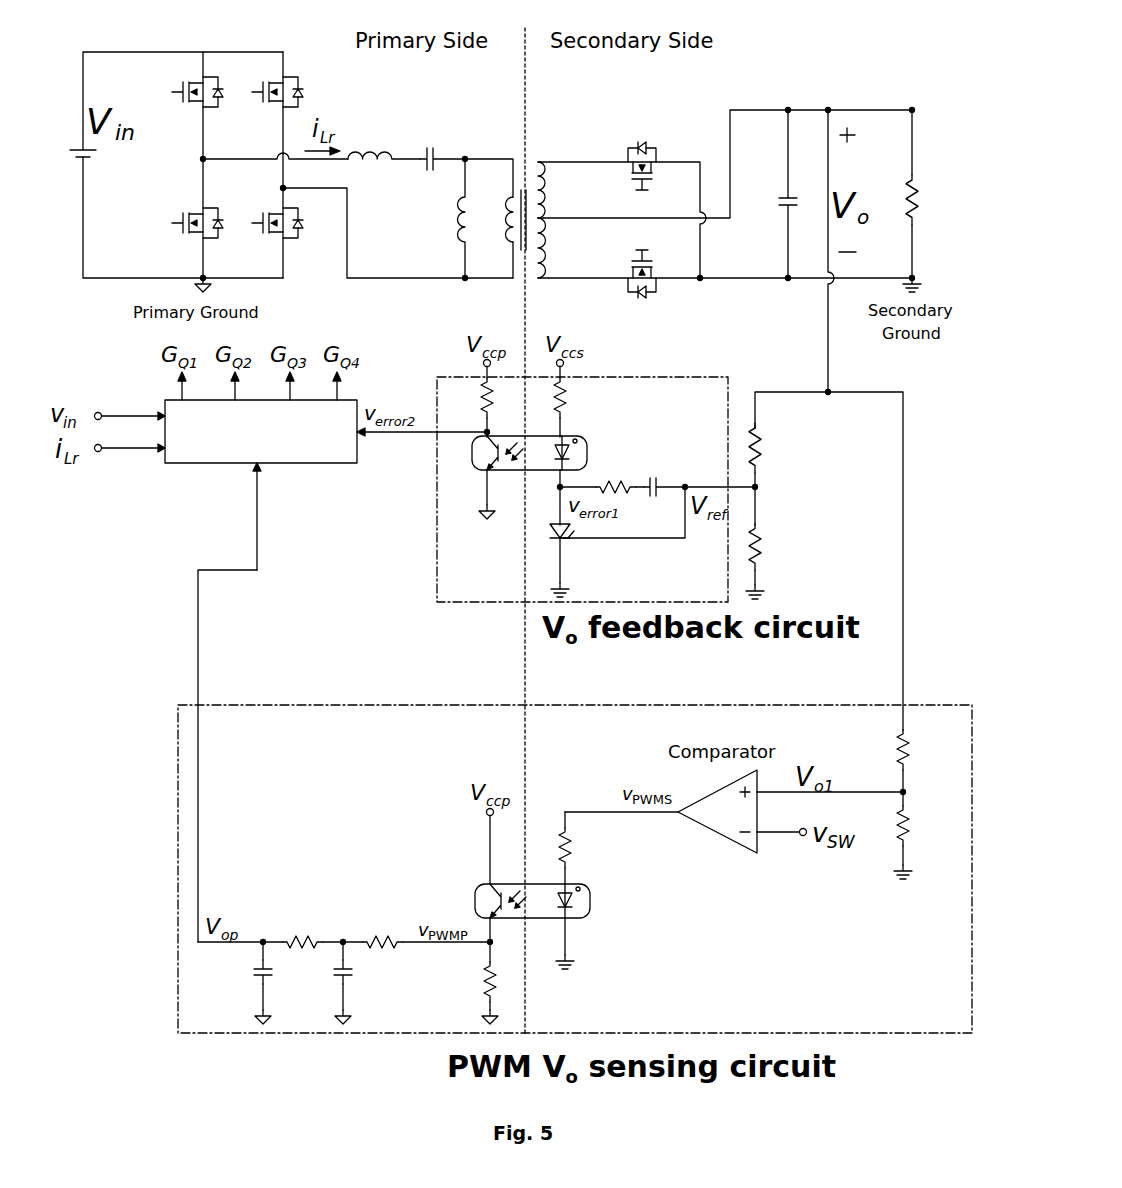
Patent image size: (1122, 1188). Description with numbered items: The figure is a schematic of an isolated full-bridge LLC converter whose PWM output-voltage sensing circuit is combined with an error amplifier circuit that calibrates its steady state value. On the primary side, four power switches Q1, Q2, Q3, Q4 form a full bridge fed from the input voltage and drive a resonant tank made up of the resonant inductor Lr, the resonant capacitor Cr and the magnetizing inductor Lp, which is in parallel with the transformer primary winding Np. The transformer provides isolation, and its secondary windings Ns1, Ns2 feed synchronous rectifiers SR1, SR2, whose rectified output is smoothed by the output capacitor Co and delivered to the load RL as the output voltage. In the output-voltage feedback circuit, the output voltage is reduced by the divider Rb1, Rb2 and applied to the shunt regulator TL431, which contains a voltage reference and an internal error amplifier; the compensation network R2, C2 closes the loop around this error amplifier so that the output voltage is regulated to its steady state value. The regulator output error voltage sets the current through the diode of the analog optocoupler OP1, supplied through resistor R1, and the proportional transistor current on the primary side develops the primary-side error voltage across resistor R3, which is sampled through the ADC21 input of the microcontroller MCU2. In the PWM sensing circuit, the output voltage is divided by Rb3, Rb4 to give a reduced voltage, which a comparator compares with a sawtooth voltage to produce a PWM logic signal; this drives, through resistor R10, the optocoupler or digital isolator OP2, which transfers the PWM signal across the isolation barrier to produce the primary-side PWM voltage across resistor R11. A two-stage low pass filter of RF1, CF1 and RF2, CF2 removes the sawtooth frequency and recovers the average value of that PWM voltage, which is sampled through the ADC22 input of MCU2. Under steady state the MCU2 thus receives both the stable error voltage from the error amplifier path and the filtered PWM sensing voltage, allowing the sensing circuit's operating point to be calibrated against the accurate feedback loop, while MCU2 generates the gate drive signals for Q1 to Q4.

The power switch Q1 is at (195, 109).
The power switch Q2 is at (195, 240).
The power switch Q3 is at (275, 109).
The power switch Q4 is at (275, 240).
The resonant inductor Lr is at (384, 181).
The resonant capacitor Cr is at (438, 179).
The magnetizing inductor Lp is at (446, 218).
The transformer primary winding Np is at (495, 220).
The transformer secondary winding Ns1 is at (562, 192).
The transformer secondary winding Ns2 is at (562, 248).
The synchronous rectifier SR1 is at (660, 152).
The synchronous rectifier SR2 is at (660, 264).
The output capacitor Co is at (767, 194).
The load resistor RL is at (935, 194).
The resistor R1 is at (580, 402).
The compensation resistor R2 is at (602, 471).
The resistor R3 is at (468, 402).
The compensation capacitor C2 is at (666, 473).
The resistor divider resistor Rb1 is at (777, 455).
The resistor divider resistor Rb2 is at (776, 543).
The resistor divider resistor Rb3 is at (926, 761).
The resistor divider resistor Rb4 is at (925, 835).
The resistor R10 is at (587, 848).
The resistor R11 is at (469, 983).
The filter resistor RF1 is at (426, 925).
The filter resistor RF2 is at (323, 925).
The filter capacitor CF1 is at (360, 983).
The filter capacitor CF2 is at (280, 983).
The analog optocoupler OP1 is at (462, 478).
The optocoupler or digital isolator OP2 is at (660, 950).
The microcontroller unit MCU2 is at (261, 431).
The adjustable shunt regulator TL431 is at (599, 560).
The ADC input ADC21 is at (399, 449).
The ADC input ADC22 is at (221, 516).